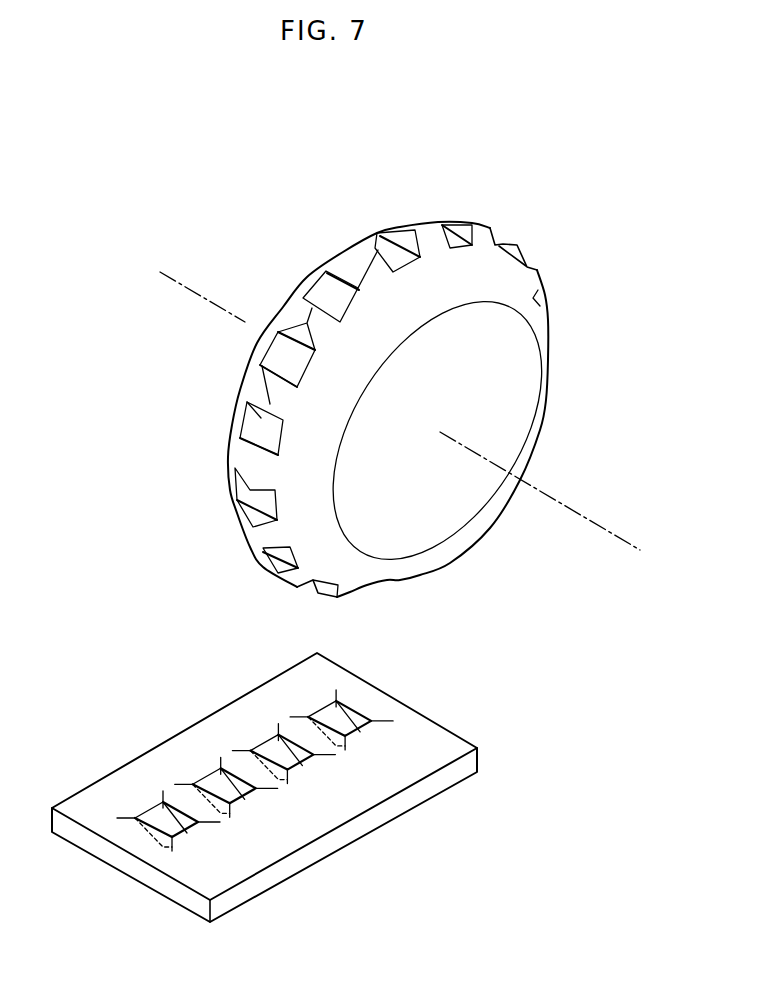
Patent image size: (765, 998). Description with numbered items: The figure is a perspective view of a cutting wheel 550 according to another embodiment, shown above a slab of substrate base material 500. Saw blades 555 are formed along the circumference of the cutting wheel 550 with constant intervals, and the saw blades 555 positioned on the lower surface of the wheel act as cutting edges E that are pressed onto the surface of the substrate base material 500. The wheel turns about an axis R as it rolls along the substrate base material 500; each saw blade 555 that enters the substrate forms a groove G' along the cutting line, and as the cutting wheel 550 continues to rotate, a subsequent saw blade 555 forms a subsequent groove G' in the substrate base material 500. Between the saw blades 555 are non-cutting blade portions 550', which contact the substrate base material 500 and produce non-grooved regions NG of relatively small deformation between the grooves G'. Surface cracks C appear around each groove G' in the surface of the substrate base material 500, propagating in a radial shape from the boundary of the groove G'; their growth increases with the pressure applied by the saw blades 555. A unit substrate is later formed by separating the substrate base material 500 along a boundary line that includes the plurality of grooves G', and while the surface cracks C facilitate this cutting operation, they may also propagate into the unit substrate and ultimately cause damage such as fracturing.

The cutting wheel 550 is at (424, 409).
The non-cutting blade portion 550' is at (209, 428).
The saw blade 555 is at (258, 468).
The cutting edge E is at (352, 270).
The rotation axis R is at (386, 402).
The substrate base material 500 is at (427, 695).
The groove G' is at (157, 787).
The non-grooved region NG is at (184, 797).
The surface crack C is at (237, 748).